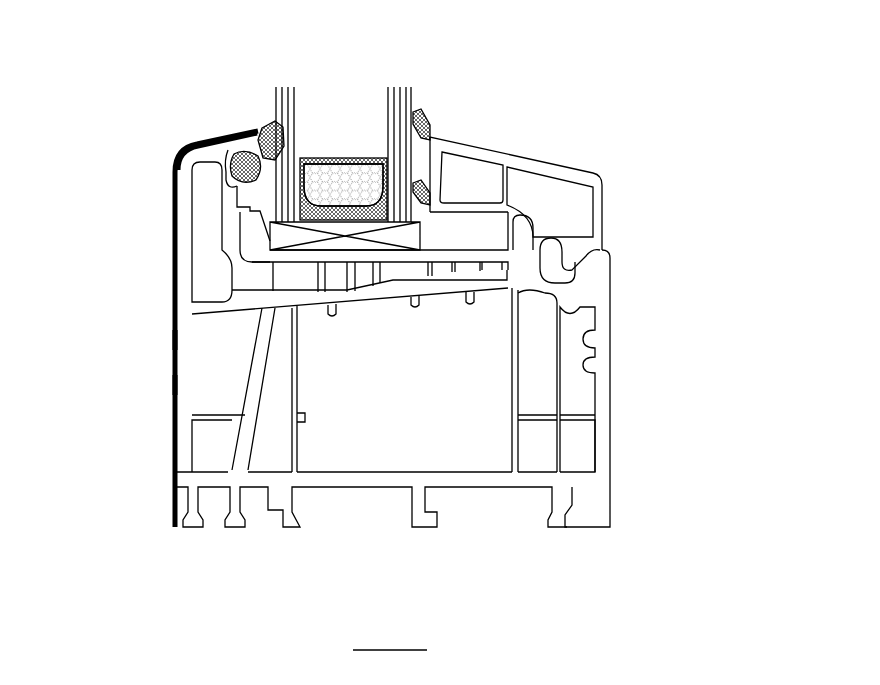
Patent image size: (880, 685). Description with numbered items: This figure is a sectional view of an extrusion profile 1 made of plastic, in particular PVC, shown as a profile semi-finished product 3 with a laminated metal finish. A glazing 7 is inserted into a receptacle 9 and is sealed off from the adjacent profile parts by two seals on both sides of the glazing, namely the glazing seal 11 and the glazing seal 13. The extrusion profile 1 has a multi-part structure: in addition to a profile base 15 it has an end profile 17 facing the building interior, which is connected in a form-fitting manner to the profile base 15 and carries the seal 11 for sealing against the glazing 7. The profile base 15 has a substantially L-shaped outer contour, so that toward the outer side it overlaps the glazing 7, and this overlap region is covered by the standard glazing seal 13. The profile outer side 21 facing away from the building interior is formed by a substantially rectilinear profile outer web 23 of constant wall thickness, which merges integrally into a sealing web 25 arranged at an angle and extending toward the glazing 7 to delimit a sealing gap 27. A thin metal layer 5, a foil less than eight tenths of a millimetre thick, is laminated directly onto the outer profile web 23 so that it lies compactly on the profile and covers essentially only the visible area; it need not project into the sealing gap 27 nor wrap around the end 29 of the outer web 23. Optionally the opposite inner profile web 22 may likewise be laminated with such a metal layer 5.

The profile 1 is at (640, 118).
The profile semi-finished product 3 is at (396, 304).
The metal layer 5 is at (173, 245).
The glazing 7 is at (403, 100).
The receptacle 9 is at (473, 237).
The glazing seal 11 is at (428, 126).
The glazing seal 13 is at (266, 123).
The profile base 15 is at (612, 317).
The end profile 17 is at (497, 142).
The profile outer side 21 is at (175, 341).
The inner profile web 22 is at (612, 385).
The profile outer web 23 is at (188, 383).
The sealing web 25 is at (196, 140).
The sealing gap 27 is at (267, 172).
The end 29 is at (246, 128).